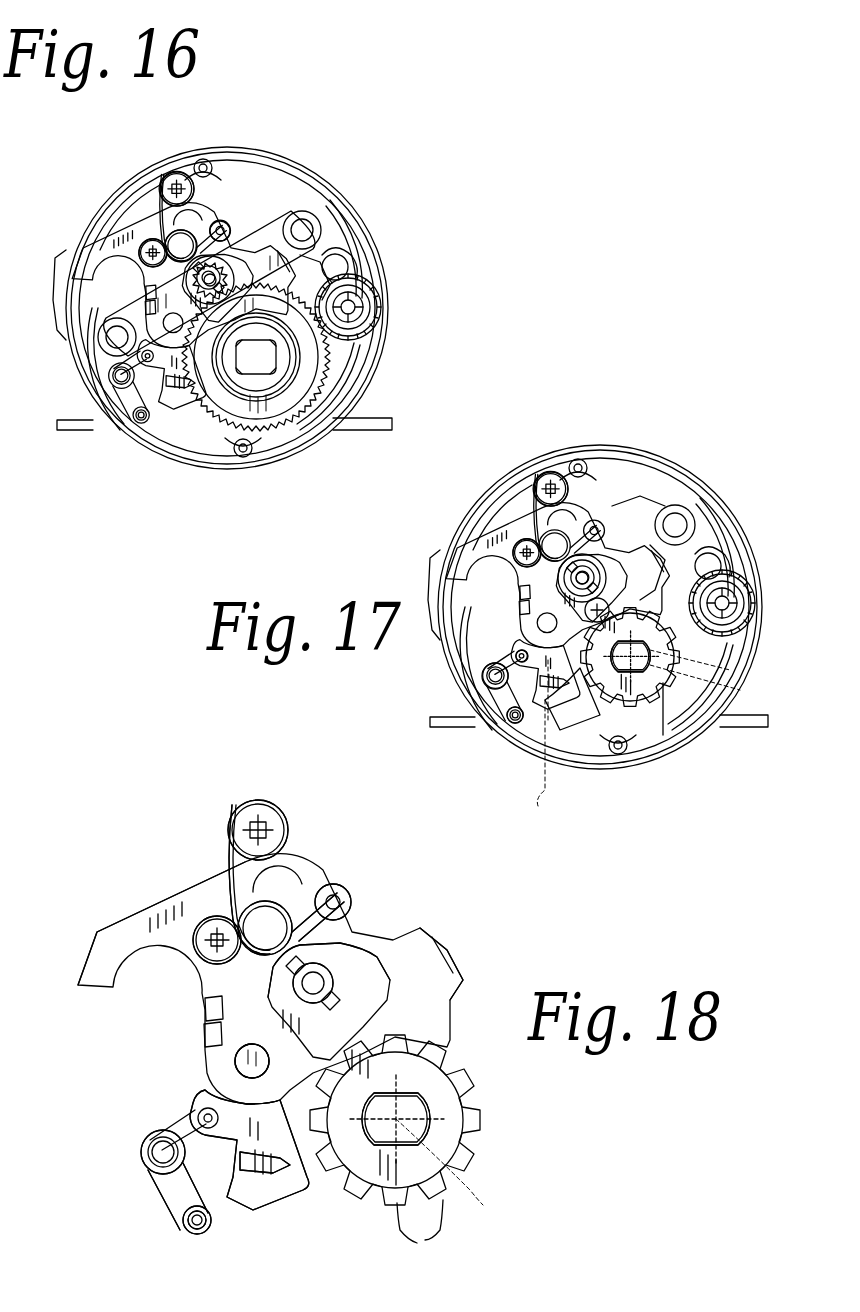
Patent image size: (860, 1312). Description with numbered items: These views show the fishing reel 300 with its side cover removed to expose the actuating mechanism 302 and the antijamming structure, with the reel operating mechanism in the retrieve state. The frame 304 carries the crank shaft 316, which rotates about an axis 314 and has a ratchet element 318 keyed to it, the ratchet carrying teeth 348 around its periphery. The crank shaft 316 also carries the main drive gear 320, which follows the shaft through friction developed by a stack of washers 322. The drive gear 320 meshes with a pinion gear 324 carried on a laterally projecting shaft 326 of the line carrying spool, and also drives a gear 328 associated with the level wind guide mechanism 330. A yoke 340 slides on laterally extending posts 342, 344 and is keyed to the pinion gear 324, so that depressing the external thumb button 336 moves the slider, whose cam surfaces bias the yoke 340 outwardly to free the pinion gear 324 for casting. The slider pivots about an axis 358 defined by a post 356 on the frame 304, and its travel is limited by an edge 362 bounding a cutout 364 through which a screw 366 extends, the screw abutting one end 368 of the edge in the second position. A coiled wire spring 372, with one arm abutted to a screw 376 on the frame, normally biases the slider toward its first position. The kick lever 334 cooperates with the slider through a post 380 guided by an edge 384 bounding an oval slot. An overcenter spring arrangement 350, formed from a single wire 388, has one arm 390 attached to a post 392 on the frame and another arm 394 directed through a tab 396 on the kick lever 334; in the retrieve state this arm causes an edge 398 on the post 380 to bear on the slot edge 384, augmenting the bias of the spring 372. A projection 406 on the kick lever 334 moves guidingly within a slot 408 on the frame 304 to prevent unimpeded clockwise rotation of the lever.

In FIG. 16, the fishing reel 300 is at (328, 156).
In FIG. 17, the fishing reel 300 is at (716, 460).
In FIG. 18, the actuating mechanism 302 is at (426, 918).
In FIG. 16, the frame 304 is at (386, 260).
In FIG. 17, the frame 304 is at (578, 458).
In FIG. 18, the frame 304 is at (160, 1006).
In FIG. 17, the axis 314 is at (650, 660).
In FIG. 18, the axis 314 is at (444, 1156).
In FIG. 16, the crank shaft 316 is at (250, 360).
In FIG. 17, the crank shaft 316 is at (655, 682).
In FIG. 17, the ratchet element 318 is at (666, 670).
In FIG. 18, the ratchet element 318 is at (478, 1100).
In FIG. 16, the main drive gear 320 is at (292, 390).
In FIG. 16, the stack of washers 322 is at (298, 364).
In FIG. 16, the pinion gear 324 is at (215, 275).
In FIG. 16, the shaft 326 is at (210, 260).
In FIG. 17, the shaft 326 is at (600, 600).
In FIG. 16, the gear 328 is at (378, 296).
In FIG. 17, the gear 328 is at (752, 616).
In FIG. 16, the level wind guide mechanism 330 is at (380, 316).
In FIG. 17, the level wind guide mechanism 330 is at (772, 598).
In FIG. 18, the kick lever 334 is at (255, 1200).
In FIG. 16, the external thumb button 336 is at (58, 246).
In FIG. 16, the yoke 340 is at (290, 206).
In FIG. 16, the post 342 is at (114, 338).
In FIG. 16, the post 344 is at (310, 228).
In FIG. 18, the teeth 348 is at (423, 1236).
In FIG. 18, the overcenter spring arrangement 350 is at (142, 1206).
In FIG. 17, the post 356 is at (530, 692).
In FIG. 17, the axis 358 is at (600, 566).
In FIG. 18, the edge 362 is at (285, 908).
In FIG. 18, the cutout 364 is at (350, 895).
In FIG. 18, the screw 366 is at (210, 922).
In FIG. 18, the end 368 is at (345, 896).
In FIG. 16, the wire spring 372 is at (160, 215).
In FIG. 18, the wire spring 372 is at (270, 860).
In FIG. 16, the screw 376 is at (170, 166).
In FIG. 17, the screw 376 is at (544, 472).
In FIG. 18, the screw 376 is at (282, 826).
In FIG. 18, the post 380 is at (236, 1058).
In FIG. 18, the edge 384 is at (330, 1000).
In FIG. 18, the wire 388 is at (185, 1220).
In FIG. 18, the arm 390 is at (205, 1215).
In FIG. 18, the post 392 is at (194, 1230).
In FIG. 18, the arm 394 is at (150, 1140).
In FIG. 18, the tab 396 is at (208, 1108).
In FIG. 18, the edge 398 is at (252, 1044).
In FIG. 17, the projection 406 is at (535, 746).
In FIG. 17, the slot 408 is at (600, 700).